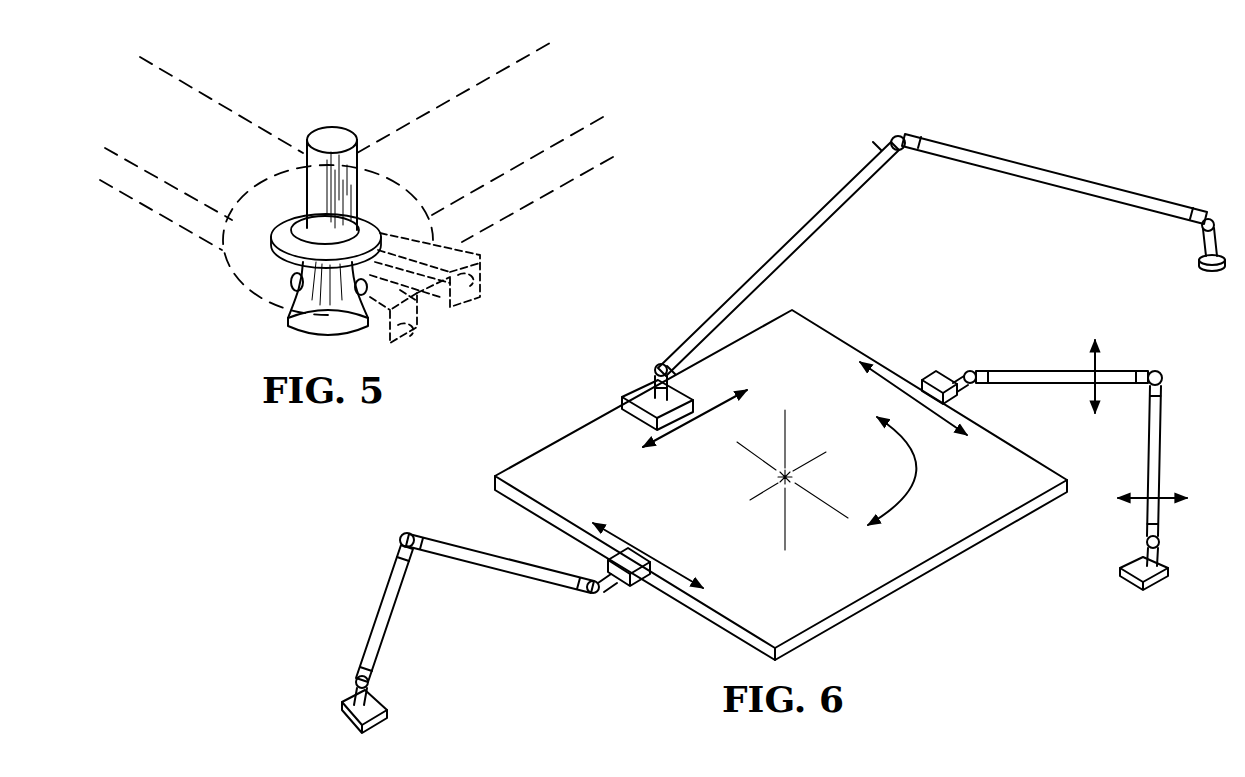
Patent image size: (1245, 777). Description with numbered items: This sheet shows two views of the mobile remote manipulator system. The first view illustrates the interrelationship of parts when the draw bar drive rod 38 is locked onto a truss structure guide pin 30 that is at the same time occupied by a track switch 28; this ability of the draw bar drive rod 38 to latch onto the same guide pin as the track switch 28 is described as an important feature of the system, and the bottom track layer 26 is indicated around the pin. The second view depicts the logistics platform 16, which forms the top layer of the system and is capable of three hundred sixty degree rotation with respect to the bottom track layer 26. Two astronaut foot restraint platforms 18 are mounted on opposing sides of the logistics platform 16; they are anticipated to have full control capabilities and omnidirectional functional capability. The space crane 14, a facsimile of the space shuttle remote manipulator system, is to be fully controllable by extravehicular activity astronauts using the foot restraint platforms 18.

In FIG. 6, the space crane 14 is at (827, 202).
In FIG. 6, the logistics platform 16 is at (857, 355).
In FIG. 6, the astronaut foot restraint platforms 18 is at (1162, 455).
In FIG. 5, the bottom track layer 26 is at (170, 212).
In FIG. 5, the track switch 28 is at (477, 280).
In FIG. 5, the truss structure guide pin 30 is at (289, 318).
In FIG. 5, the draw bar drive rod 38 is at (336, 128).